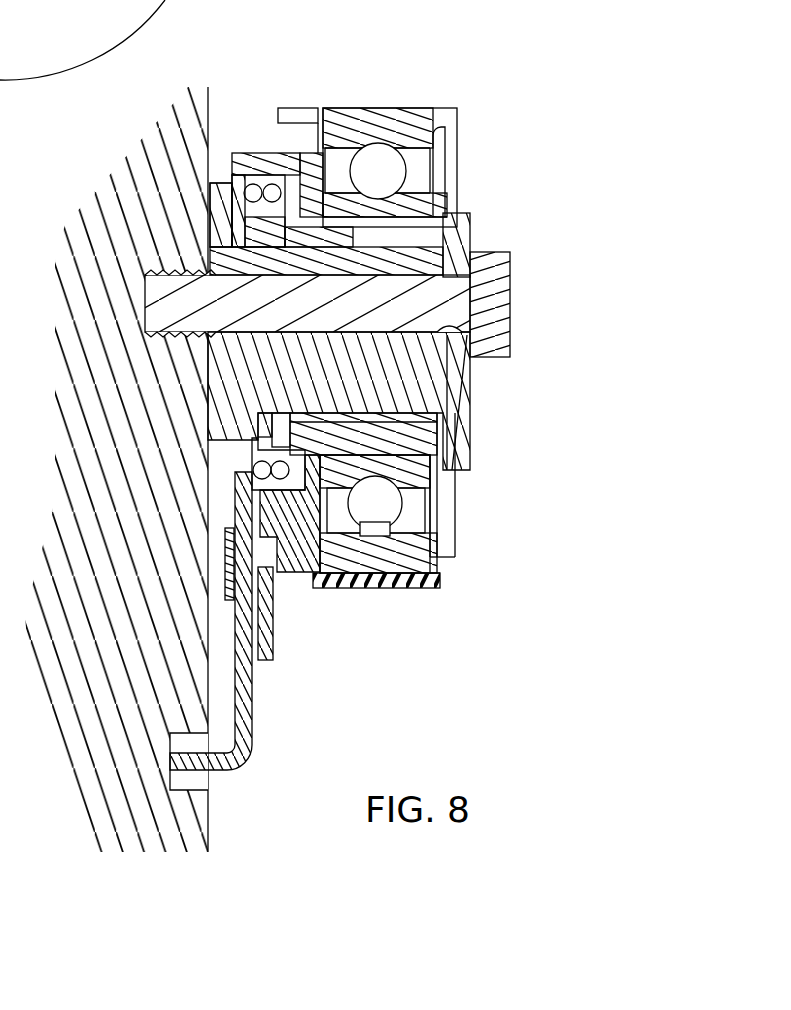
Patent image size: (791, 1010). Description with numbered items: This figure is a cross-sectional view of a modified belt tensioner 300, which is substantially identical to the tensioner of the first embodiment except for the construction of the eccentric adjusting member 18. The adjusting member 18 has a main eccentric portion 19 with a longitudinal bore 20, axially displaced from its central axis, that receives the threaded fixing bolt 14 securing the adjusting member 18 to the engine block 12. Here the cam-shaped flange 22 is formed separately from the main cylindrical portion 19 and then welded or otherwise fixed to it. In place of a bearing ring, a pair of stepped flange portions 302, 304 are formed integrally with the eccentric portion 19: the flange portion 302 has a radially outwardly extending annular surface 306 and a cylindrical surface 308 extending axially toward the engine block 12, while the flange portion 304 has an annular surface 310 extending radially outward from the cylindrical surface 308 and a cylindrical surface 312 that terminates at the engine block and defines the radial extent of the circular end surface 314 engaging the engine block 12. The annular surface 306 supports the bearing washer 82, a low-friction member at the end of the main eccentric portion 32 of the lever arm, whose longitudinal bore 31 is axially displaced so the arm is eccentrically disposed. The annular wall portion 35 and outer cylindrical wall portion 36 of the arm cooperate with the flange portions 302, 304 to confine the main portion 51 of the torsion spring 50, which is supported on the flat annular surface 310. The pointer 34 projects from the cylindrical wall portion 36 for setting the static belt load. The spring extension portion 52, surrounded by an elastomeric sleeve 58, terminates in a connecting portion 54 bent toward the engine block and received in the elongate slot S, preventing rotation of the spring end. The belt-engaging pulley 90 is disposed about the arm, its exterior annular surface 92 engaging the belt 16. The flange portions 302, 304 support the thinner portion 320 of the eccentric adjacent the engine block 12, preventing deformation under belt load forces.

The tensioner 300 is at (487, 66).
The cylindrical surface 312 is at (212, 183).
The annular surface 310 is at (236, 177).
The cylindrical surface 308 is at (262, 215).
The annular surface 306 is at (315, 187).
The annular wall portion 35 is at (402, 143).
The main eccentric portion 32 is at (437, 233).
The thinner portion 320 is at (435, 263).
The fixing bolt 14 is at (497, 268).
The longitudinal bore 20 is at (468, 332).
The main eccentric portion 19 is at (412, 370).
The eccentric adjusting member 18 is at (476, 399).
The longitudinal bore 31 is at (448, 413).
The bearing washer 82 is at (243, 418).
The flange 22 is at (463, 463).
The belt-engaging pulley 90 is at (463, 549).
The exterior annular surface 92 is at (443, 577).
The drive or timing belt 16 is at (405, 582).
The outer cylindrical wall portion 36 is at (298, 520).
The pointer 34 is at (273, 640).
The spring extension portion 52 is at (250, 703).
The engine block 12 is at (210, 813).
The connecting portion 54 is at (167, 787).
The elongate slot S is at (180, 740).
The elastomeric sleeve 58 is at (230, 578).
The torsion spring 50 is at (245, 465).
The main portion 51 is at (240, 468).
The flange portion 304 is at (220, 455).
The flange portion 302 is at (250, 428).
The circular end surface 314 is at (208, 242).